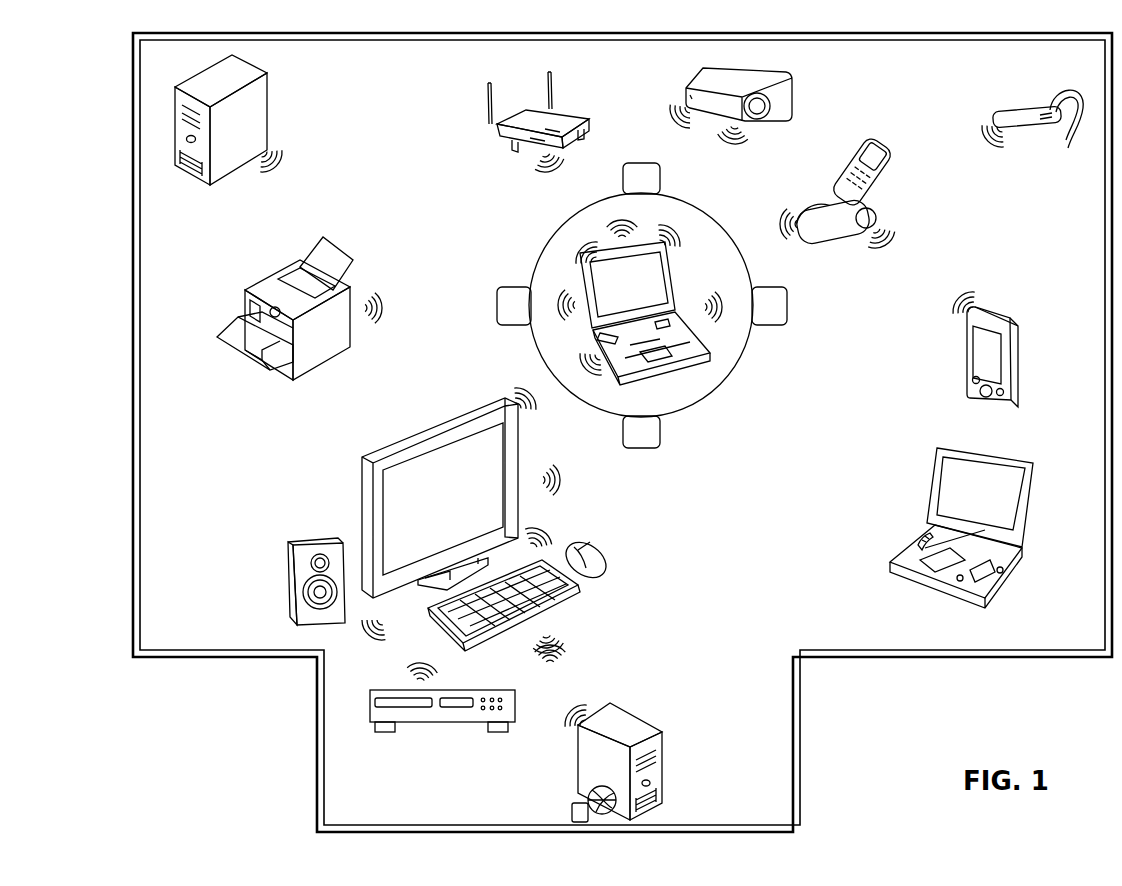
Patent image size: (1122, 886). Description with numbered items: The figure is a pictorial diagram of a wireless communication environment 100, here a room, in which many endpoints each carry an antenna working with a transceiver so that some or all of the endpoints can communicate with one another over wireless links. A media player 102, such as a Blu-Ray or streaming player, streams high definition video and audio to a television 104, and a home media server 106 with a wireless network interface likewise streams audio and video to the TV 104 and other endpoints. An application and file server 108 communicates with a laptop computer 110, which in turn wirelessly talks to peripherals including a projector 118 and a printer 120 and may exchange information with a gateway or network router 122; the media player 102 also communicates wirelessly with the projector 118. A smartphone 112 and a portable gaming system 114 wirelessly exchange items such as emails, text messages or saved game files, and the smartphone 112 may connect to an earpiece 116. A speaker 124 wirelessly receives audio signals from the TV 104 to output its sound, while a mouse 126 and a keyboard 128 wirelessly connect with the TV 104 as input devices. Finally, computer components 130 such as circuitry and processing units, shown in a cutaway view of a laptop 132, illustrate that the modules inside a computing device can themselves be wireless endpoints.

The environment 100 is at (176, 670).
The media player 102 is at (473, 688).
The television 104 is at (500, 458).
The home media server 106 is at (635, 727).
The application and file server 108 is at (258, 108).
The laptop computer 110 is at (660, 282).
The smartphone 112 is at (890, 165).
The portable gaming system 114 is at (1000, 332).
The earpiece 116 is at (1012, 112).
The projector 118 is at (768, 76).
The printer 120 is at (270, 280).
The network router 122 is at (496, 135).
The speaker 124 is at (316, 540).
The mouse 126 is at (590, 548).
The keyboard 128 is at (575, 595).
The computer components 130 is at (1000, 568).
The laptop 132 is at (922, 540).